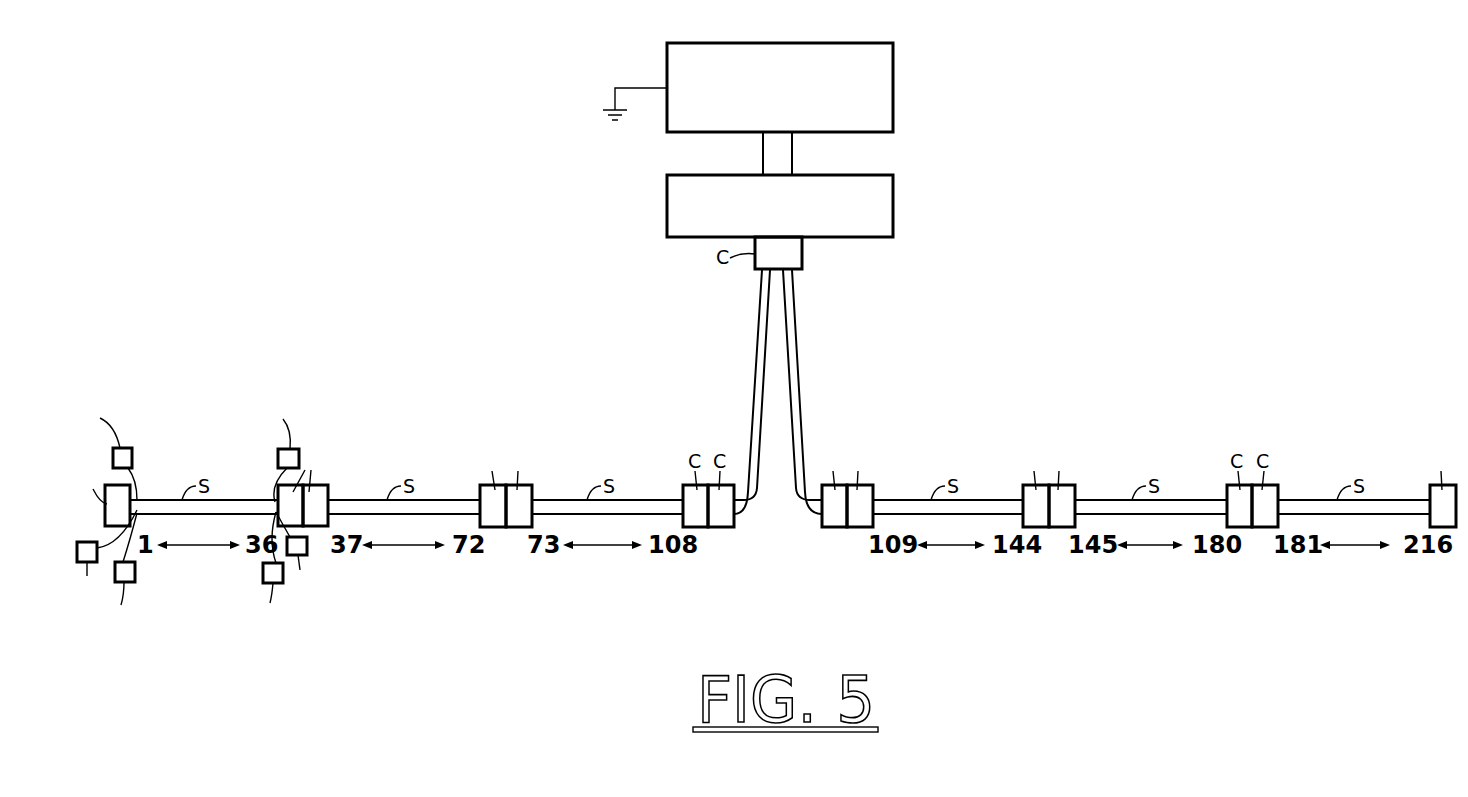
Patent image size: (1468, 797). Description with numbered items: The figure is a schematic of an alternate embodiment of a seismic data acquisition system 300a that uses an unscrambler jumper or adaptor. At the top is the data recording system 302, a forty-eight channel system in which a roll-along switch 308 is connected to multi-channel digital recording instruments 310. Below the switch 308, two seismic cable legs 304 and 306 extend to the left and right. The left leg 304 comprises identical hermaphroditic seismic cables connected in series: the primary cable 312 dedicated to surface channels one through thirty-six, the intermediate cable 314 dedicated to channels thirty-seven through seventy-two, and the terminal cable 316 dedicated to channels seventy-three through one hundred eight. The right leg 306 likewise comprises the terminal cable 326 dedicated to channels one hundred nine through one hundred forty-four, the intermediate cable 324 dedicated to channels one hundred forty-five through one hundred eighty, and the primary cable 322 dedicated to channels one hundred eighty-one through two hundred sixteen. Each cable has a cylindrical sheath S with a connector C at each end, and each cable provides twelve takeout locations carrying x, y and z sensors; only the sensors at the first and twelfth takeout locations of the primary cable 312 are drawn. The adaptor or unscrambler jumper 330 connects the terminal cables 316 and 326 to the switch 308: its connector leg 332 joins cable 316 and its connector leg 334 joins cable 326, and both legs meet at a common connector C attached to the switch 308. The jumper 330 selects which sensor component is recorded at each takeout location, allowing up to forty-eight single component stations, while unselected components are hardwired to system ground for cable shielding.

The seismic data acquisition system 300a is at (474, 158).
The data recording system 302 is at (980, 126).
The seismic cable leg 304 is at (398, 374).
The seismic cable leg 306 is at (1262, 378).
The switch 308 is at (893, 203).
The recording instruments 310 is at (893, 87).
The primary cable 312 is at (152, 507).
The intermediate cable 314 is at (343, 507).
The terminal cable 316 is at (553, 507).
The primary cable 322 is at (1410, 505).
The intermediate cable 324 is at (1093, 507).
The terminal cable 326 is at (890, 507).
The unscrambler jumper 330 is at (835, 392).
The connector leg 332 is at (757, 352).
The connector leg 334 is at (873, 331).